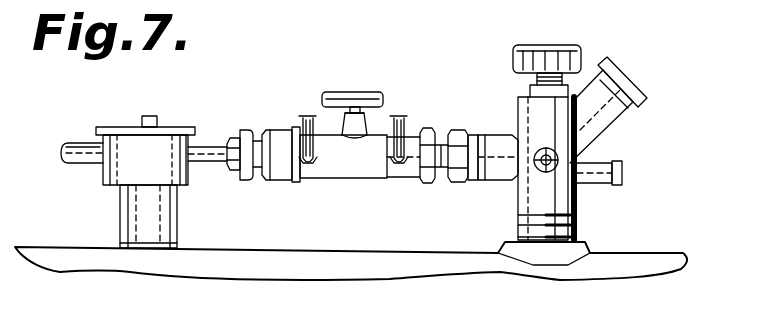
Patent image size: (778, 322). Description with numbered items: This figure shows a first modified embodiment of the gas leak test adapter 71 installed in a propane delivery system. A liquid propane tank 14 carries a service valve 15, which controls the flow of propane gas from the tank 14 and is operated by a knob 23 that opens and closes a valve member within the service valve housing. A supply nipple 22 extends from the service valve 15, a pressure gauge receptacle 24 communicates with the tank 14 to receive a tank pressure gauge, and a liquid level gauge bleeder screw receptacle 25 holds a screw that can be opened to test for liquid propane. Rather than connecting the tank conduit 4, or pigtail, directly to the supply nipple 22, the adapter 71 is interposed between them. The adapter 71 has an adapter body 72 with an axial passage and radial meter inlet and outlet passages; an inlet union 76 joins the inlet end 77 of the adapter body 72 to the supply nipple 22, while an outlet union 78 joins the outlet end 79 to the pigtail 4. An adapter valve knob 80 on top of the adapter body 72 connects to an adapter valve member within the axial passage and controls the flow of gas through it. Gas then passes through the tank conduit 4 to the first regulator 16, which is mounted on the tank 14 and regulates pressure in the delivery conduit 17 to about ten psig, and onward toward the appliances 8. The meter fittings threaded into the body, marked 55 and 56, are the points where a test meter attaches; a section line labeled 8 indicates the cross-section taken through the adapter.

The tank conduit 4 is at (212, 164).
The propane appliances 8 is at (219, 131).
The liquid propane tank 14 is at (642, 253).
The service valve 15 is at (514, 97).
The first regulator 16 is at (110, 127).
The delivery conduit 17 is at (78, 142).
The supply nipple 22 is at (496, 182).
The knob 23 is at (574, 44).
The pressure gauge receptacle 24 is at (608, 184).
The liquid level gauge bleeder screw receptacle 25 is at (590, 163).
The pin 55 is at (399, 114).
The pin 56 is at (308, 114).
The gas leak test adapter 71 is at (376, 92).
The adapter body 72 is at (345, 168).
The inlet union 76 is at (450, 184).
The inlet end 77 is at (404, 178).
The outlet union 78 is at (242, 181).
The outlet end 79 is at (268, 182).
The adapter valve knob 80 is at (352, 92).